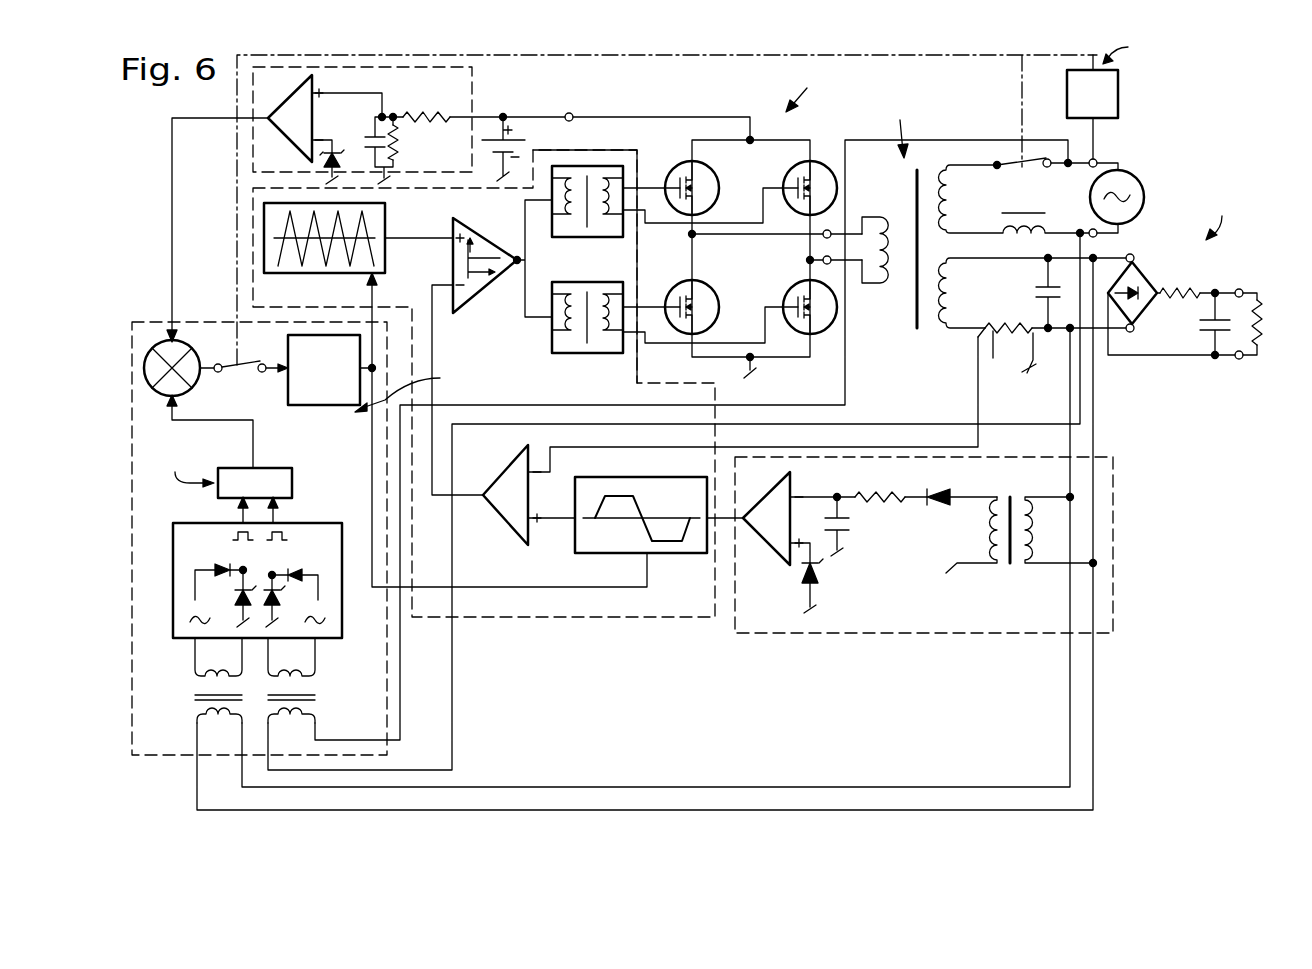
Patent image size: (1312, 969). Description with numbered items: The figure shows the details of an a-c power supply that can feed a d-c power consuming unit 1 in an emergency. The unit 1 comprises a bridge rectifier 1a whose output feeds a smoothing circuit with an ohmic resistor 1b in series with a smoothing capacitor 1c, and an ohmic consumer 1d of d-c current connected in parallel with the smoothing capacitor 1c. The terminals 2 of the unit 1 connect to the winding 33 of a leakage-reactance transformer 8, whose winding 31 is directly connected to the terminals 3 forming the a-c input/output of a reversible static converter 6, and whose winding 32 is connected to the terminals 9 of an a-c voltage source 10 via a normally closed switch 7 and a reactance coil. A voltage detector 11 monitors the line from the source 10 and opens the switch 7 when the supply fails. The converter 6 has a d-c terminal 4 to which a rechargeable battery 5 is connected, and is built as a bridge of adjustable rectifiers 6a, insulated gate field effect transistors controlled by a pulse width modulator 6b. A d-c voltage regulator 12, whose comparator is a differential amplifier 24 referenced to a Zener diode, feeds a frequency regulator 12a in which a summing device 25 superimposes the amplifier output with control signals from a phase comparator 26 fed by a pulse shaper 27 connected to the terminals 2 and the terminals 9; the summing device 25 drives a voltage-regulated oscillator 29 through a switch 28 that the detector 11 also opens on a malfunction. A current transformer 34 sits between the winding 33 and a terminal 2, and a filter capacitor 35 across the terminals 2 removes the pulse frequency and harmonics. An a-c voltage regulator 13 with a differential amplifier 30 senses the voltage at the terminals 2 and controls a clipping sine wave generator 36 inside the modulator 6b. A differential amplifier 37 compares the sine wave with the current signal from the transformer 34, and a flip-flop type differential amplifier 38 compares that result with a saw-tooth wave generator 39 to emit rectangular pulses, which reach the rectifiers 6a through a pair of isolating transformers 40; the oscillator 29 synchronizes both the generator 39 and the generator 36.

The d-c power consuming unit 1 is at (1218, 216).
The rectifier 1a is at (1144, 283).
The ohmic resistor 1b is at (1194, 288).
The smoothing capacitor 1c is at (1201, 326).
The ohmic consumer 1d is at (1262, 334).
The terminals 2 is at (1134, 256).
The terminals 3 is at (832, 231).
The terminal 4 is at (571, 114).
The rechargeable battery 5 is at (512, 149).
The static converter 6 is at (804, 88).
The adjustable rectifiers 6a is at (787, 173).
The pulse width modulator 6b is at (614, 149).
The switch 7 is at (1022, 162).
The leakage-reactance transformer 8 is at (906, 211).
The terminals 9 is at (1098, 160).
The a-c voltage source 10 is at (1146, 189).
The voltage detector 11 is at (1120, 93).
The d-c voltage regulator 12 is at (472, 98).
The frequency regulator 12a is at (389, 678).
The a-c voltage regulator 13 is at (913, 636).
The differential amplifier 24 is at (293, 92).
The summing device 25 is at (187, 351).
The phase comparator 26 is at (264, 468).
The pulse shaper 27 is at (314, 522).
The switch 28 is at (237, 368).
The voltage-regulated oscillator 29 is at (347, 408).
The differential amplifier 30 is at (786, 491).
The winding 31 is at (894, 286).
The winding 32 is at (951, 193).
The winding 33 is at (940, 333).
The current transformer 34 is at (1007, 356).
The filter capacitor 35 is at (1034, 293).
The sine wave generator 36 is at (573, 548).
The differential amplifier 37 is at (504, 478).
The differential amplifier 38 is at (478, 238).
The saw-tooth wave generator 39 is at (387, 223).
The isolating transformers 40 is at (566, 282).